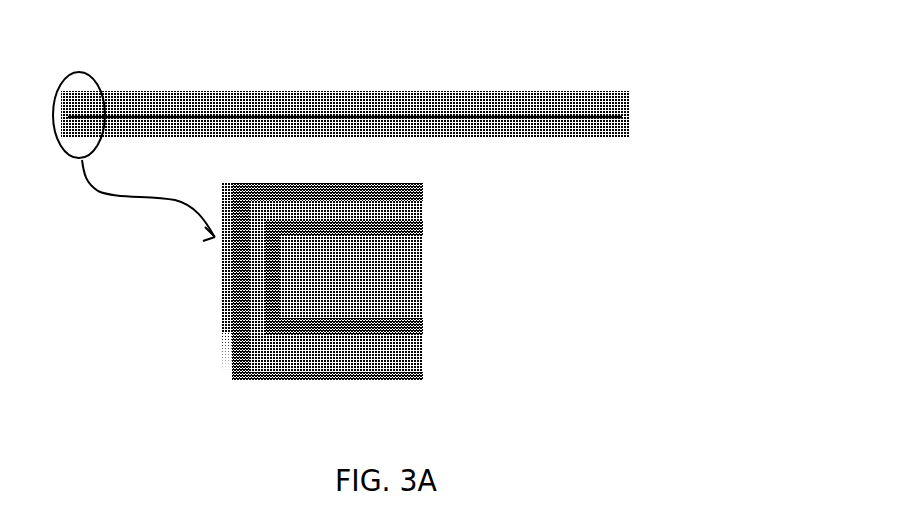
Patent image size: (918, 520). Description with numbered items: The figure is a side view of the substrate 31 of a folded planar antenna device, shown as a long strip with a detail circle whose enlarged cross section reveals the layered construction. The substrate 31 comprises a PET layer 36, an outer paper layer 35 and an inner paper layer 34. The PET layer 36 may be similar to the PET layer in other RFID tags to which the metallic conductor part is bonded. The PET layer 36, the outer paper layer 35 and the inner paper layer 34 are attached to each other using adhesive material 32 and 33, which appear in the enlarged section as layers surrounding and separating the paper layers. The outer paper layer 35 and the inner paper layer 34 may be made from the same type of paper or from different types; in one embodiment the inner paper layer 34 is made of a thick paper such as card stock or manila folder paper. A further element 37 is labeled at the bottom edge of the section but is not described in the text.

The substrate 31 is at (637, 87).
The adhesive material 32 is at (428, 203).
The adhesive material 33 is at (412, 230).
The inner paper layer 34 is at (410, 287).
The outer paper layer 35 is at (410, 342).
The PET layer 36 is at (227, 273).
The bottom layer 37 is at (248, 382).